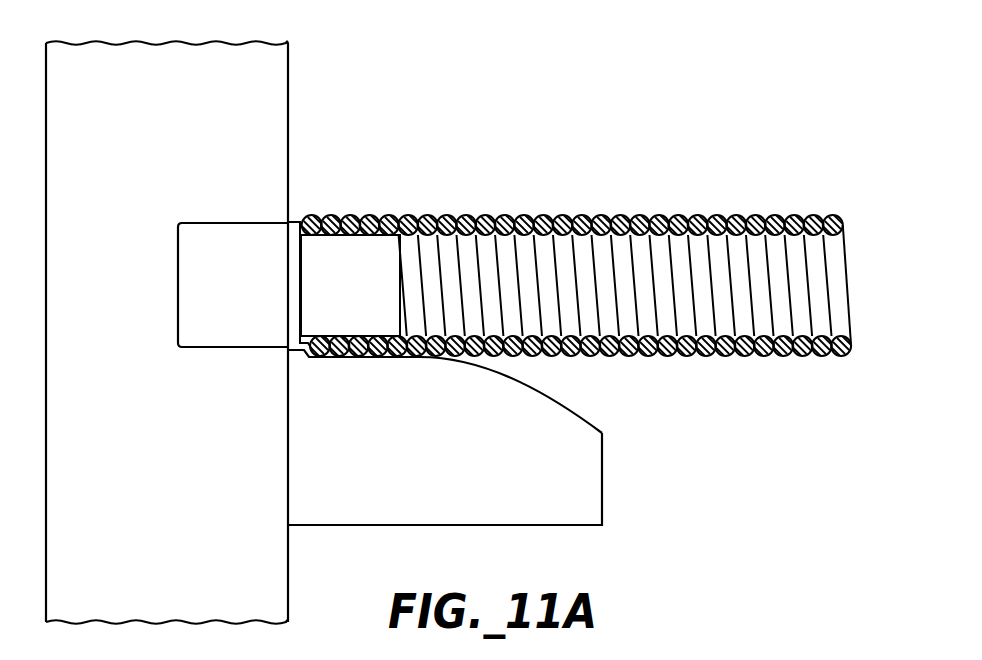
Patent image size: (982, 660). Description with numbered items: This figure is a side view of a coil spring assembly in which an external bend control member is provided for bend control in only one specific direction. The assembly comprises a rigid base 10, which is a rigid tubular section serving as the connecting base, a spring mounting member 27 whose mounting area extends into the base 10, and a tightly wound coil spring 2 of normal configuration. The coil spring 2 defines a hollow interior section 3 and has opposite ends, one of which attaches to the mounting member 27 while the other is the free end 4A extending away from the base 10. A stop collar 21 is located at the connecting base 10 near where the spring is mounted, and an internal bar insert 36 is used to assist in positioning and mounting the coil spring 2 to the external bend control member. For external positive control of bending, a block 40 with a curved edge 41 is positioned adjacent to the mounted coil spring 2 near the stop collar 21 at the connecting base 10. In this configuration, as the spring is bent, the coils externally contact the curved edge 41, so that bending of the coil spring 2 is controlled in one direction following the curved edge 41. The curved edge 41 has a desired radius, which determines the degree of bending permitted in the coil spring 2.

The rigid base 10 is at (262, 123).
The spring mounting member 27 is at (260, 223).
The stop collar 21 is at (302, 263).
The internal bar insert 36 is at (403, 266).
The hollow interior section 3 is at (668, 258).
The coil spring 2 is at (601, 263).
The end of coil spring 4A is at (845, 262).
The curved edge 41 is at (562, 404).
The block 40 is at (467, 437).